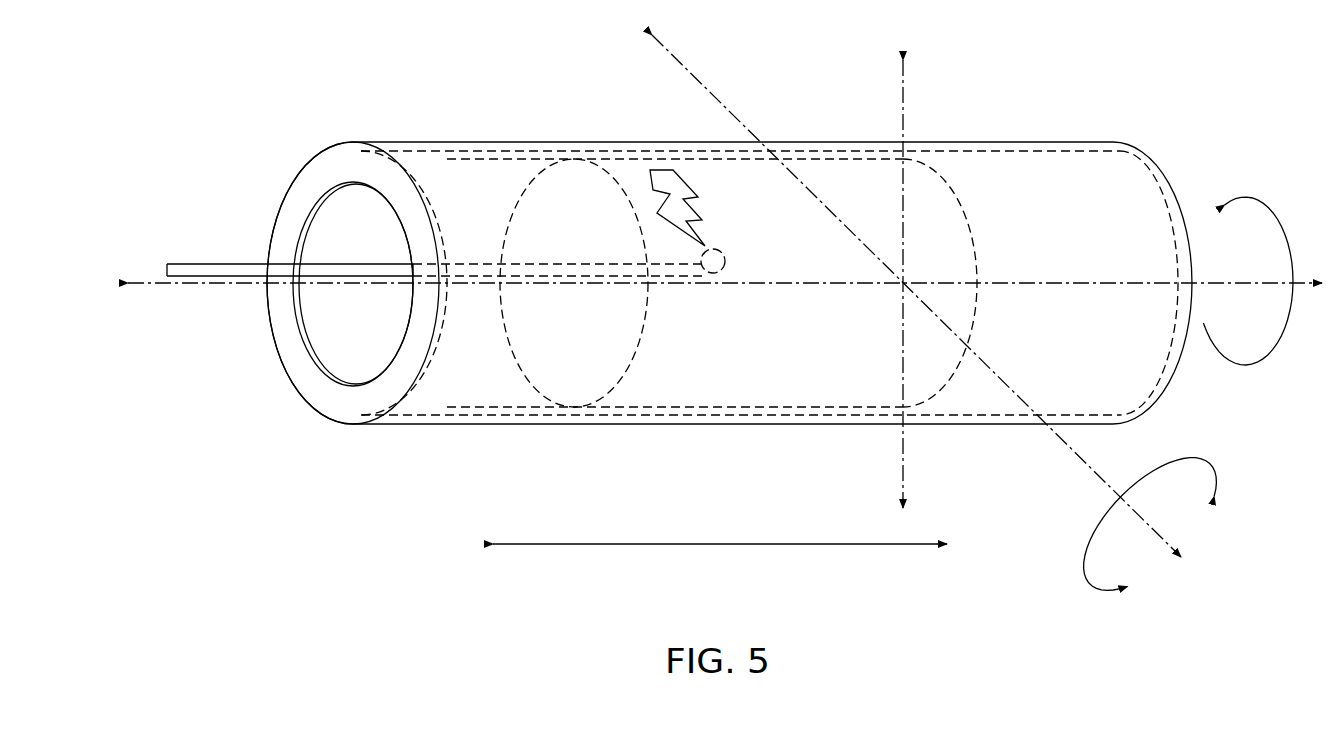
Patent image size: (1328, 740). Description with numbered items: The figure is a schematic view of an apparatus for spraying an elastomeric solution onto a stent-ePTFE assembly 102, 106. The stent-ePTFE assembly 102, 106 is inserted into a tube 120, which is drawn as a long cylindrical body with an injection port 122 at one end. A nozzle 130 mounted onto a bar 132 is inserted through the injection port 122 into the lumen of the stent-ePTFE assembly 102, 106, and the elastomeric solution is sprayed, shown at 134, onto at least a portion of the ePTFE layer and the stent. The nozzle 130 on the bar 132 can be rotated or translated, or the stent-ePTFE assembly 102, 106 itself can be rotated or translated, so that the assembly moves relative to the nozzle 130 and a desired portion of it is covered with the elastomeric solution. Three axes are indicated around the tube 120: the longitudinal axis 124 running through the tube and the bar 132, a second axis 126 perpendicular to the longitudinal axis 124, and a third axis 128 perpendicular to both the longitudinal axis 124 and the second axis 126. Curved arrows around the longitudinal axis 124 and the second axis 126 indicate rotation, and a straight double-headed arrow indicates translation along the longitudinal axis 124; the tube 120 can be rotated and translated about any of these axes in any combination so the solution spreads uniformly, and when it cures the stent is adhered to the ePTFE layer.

The stent 102 is at (727, 178).
The ePTFE layer 106 is at (769, 257).
The tube 120 is at (447, 163).
The injection port 122 is at (335, 335).
The longitudinal axis 124 is at (183, 296).
The second axis 126 is at (1082, 462).
The third axis 128 is at (898, 118).
The nozzle 130 is at (733, 258).
The bar 132 is at (367, 264).
The sprayed elastomeric solution 134 is at (706, 207).